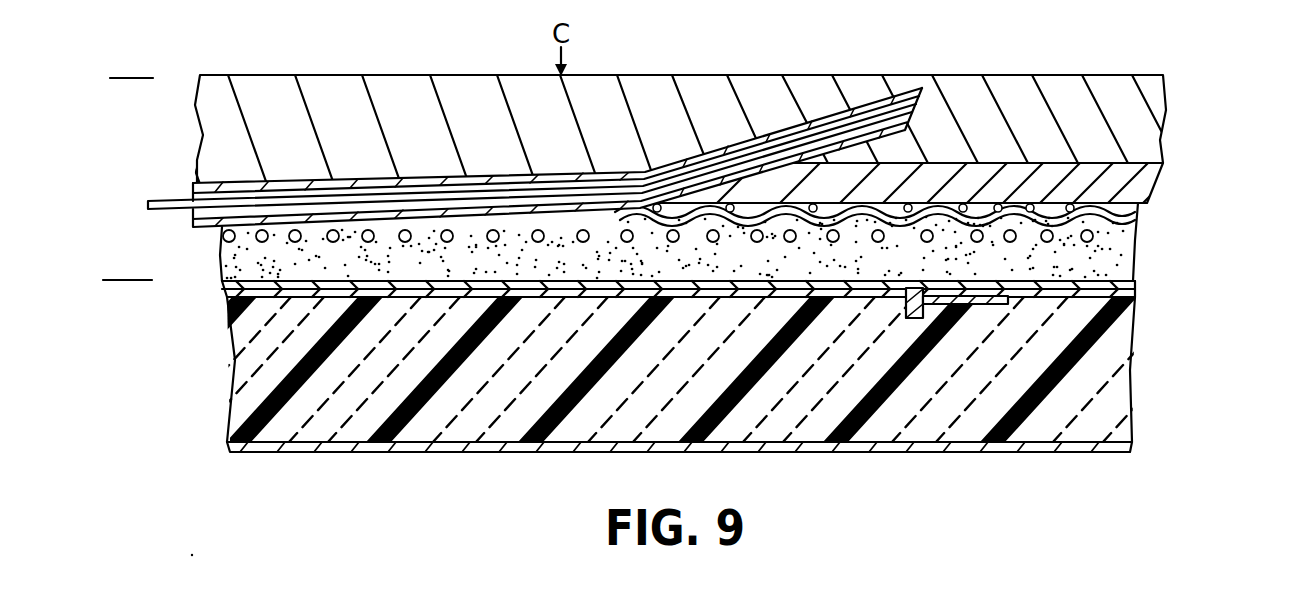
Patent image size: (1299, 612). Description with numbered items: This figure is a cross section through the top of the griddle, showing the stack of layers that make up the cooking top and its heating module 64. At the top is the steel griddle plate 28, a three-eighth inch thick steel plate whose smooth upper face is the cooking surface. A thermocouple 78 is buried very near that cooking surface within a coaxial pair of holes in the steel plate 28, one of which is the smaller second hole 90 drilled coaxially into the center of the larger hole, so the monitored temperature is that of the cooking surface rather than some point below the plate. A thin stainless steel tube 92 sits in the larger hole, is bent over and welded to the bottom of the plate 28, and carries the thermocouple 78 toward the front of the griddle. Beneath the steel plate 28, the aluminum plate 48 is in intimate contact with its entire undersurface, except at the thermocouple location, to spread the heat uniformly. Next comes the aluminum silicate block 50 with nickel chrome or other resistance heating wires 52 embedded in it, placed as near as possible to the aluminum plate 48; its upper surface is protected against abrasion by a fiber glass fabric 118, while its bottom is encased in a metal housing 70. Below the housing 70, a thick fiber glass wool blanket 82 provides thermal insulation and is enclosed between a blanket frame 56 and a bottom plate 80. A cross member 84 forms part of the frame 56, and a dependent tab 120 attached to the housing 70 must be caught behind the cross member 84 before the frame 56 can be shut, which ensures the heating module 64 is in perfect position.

The steel griddle plate 28 is at (1158, 107).
The aluminum plate 48 is at (1167, 172).
The fiber glass fabric 118 is at (1108, 207).
The aluminum silicate block 50 is at (688, 242).
The resistance heating wires 52 is at (222, 240).
The metal housing 70 is at (217, 283).
The blanket frame 56 is at (217, 300).
The fiber glass wool blanket 82 is at (1161, 440).
The bottom plate 80 is at (1081, 446).
The dependent tab 120 is at (903, 310).
The cross member 84 is at (960, 304).
The thermocouple 78 is at (559, 122).
The stainless steel tube 92 is at (862, 97).
The second hole 90 is at (892, 97).
The heating module 64 is at (128, 89).